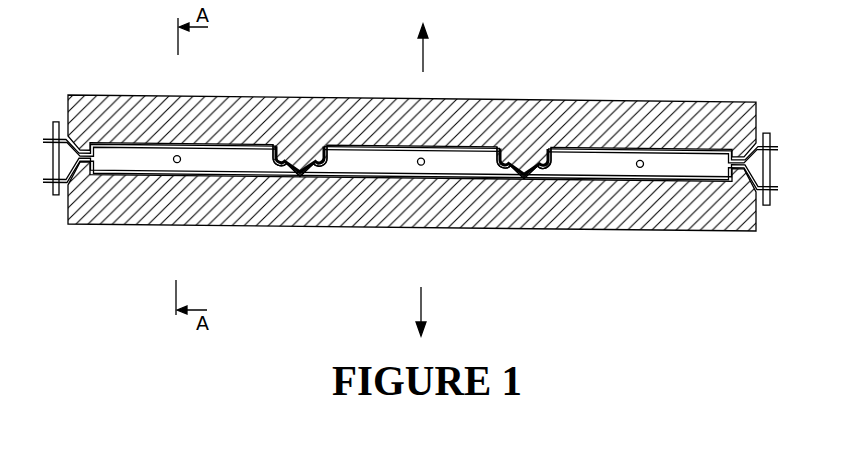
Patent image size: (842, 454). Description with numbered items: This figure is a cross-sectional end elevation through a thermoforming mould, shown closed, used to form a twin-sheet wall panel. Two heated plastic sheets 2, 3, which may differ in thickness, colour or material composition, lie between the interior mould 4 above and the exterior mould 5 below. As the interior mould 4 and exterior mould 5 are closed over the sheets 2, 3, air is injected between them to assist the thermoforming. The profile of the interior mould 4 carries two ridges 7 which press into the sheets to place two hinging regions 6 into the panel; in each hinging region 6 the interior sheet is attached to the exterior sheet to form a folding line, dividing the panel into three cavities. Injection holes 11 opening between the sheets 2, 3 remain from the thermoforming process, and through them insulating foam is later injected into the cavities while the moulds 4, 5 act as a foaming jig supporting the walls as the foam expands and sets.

The plastic sheet 2 is at (277, 148).
The plastic sheet 3 is at (262, 176).
The interior mould 4 is at (222, 106).
The exterior mould 5 is at (358, 210).
The hinging region 6 is at (300, 176).
The ridge 7 is at (302, 150).
The injection hole 11 is at (176, 161).